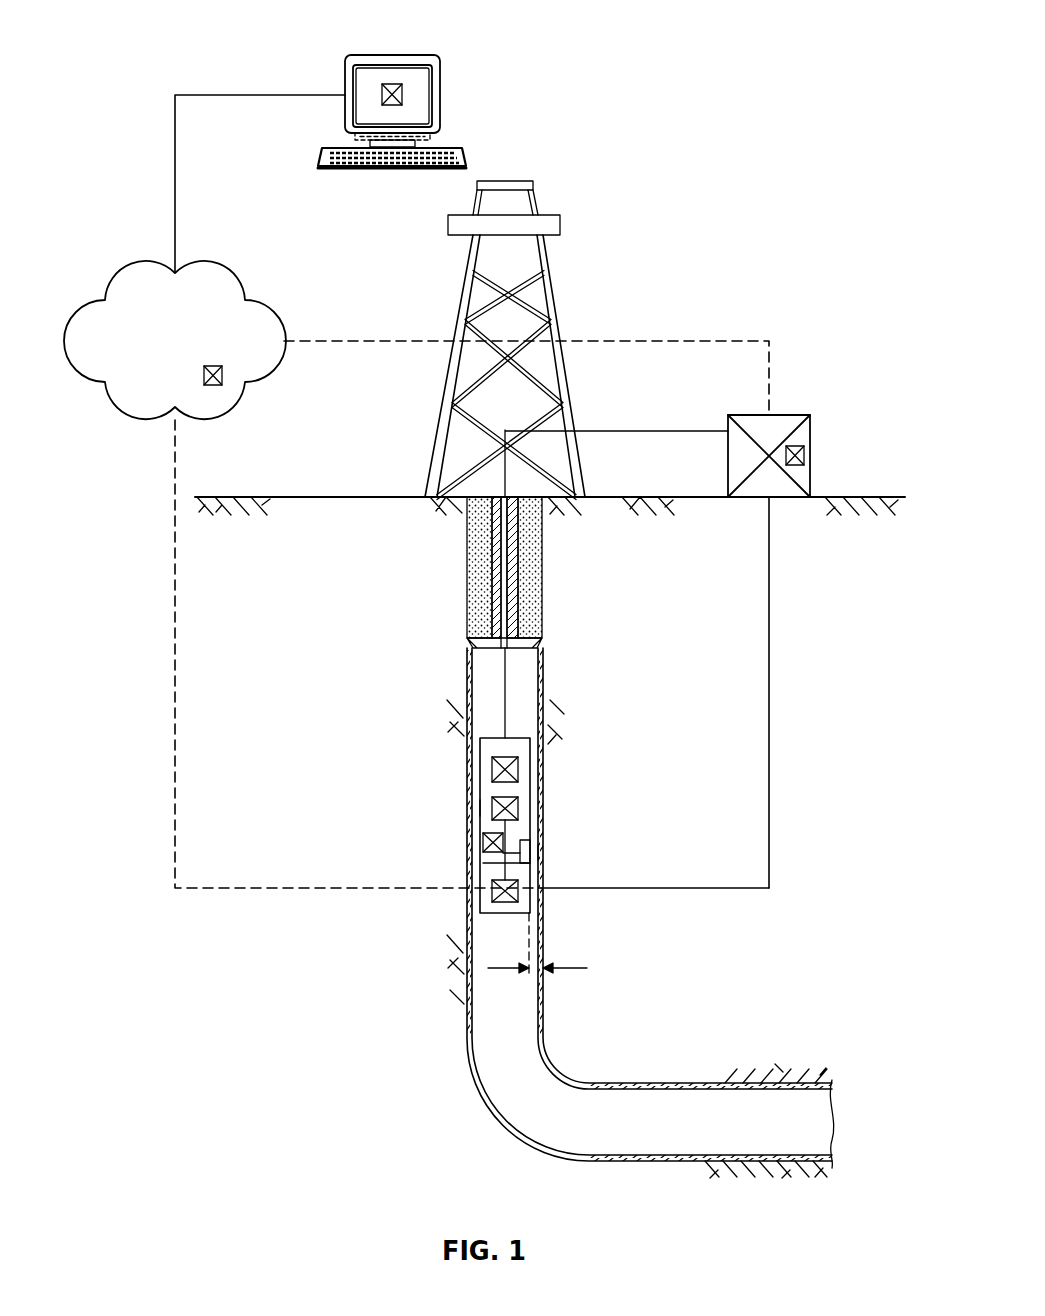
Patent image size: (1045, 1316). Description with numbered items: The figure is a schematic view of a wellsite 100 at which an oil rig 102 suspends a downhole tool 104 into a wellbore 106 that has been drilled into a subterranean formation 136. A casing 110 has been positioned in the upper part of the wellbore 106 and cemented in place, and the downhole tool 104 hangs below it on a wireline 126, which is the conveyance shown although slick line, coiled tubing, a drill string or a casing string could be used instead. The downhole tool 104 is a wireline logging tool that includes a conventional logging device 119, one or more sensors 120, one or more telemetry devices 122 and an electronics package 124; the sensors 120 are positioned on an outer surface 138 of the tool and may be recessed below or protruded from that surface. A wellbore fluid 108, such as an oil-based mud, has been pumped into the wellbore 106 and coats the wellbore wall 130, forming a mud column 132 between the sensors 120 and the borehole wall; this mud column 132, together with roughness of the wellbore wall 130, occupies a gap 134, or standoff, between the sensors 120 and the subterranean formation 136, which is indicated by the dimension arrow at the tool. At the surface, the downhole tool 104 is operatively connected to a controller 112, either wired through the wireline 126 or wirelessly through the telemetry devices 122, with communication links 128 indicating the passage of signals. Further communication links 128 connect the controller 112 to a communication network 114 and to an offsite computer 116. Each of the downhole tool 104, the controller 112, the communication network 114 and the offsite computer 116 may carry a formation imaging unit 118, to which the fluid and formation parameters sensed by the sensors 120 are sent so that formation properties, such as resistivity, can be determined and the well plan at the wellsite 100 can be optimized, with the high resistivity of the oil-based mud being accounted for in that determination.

The wellsite 100 is at (808, 241).
The oil rig 102 is at (548, 263).
The downhole tool 104 is at (480, 760).
The wellbore 106 is at (795, 1140).
The wellbore fluid 108 is at (541, 880).
The casing 110 is at (512, 603).
The controller 112 is at (812, 425).
The communication network 114 is at (276, 315).
The offsite computer 116 is at (440, 95).
The formation imaging unit 118 is at (392, 84).
The conventional logging device 119 is at (518, 765).
The sensor 120 is at (541, 852).
The telemetry device 122 is at (518, 892).
The electronics package 124 is at (518, 803).
The wireline 126 is at (508, 690).
The communication link 128 is at (175, 152).
The wellbore wall 130 is at (470, 1040).
The mud column 132 is at (541, 888).
The gap 134 is at (587, 968).
The subterranean formation 136 is at (790, 1003).
The outer surface 138 is at (480, 808).